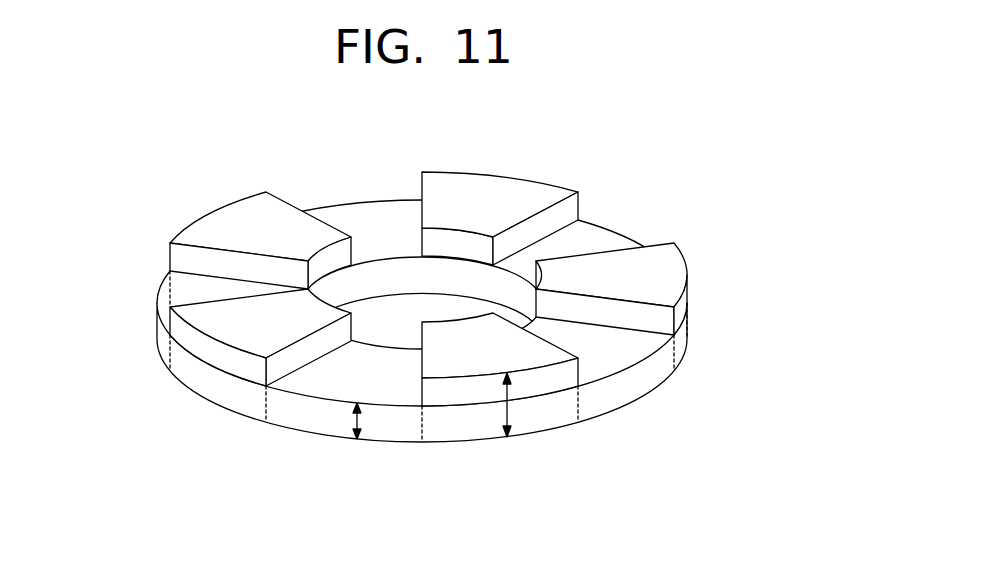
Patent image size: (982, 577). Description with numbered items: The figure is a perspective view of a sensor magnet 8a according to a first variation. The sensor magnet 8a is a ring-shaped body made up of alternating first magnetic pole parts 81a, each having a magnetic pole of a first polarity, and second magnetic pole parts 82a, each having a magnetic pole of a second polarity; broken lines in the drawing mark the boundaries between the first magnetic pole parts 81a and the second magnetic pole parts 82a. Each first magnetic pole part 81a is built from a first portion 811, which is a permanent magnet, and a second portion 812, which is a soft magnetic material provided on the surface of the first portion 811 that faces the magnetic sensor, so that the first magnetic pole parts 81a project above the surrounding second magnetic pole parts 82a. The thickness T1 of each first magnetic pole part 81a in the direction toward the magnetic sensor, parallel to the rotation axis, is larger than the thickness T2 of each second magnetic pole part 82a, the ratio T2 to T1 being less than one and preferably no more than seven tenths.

The sensor magnet 8a is at (464, 354).
The first magnetic pole part 81a is at (499, 355).
The second magnetic pole part 82a is at (367, 212).
The first portion 811 is at (690, 342).
The second portion 812 is at (688, 302).
The thickness of first magnetic pole part T1 is at (507, 413).
The thickness of second magnetic pole part T2 is at (357, 423).